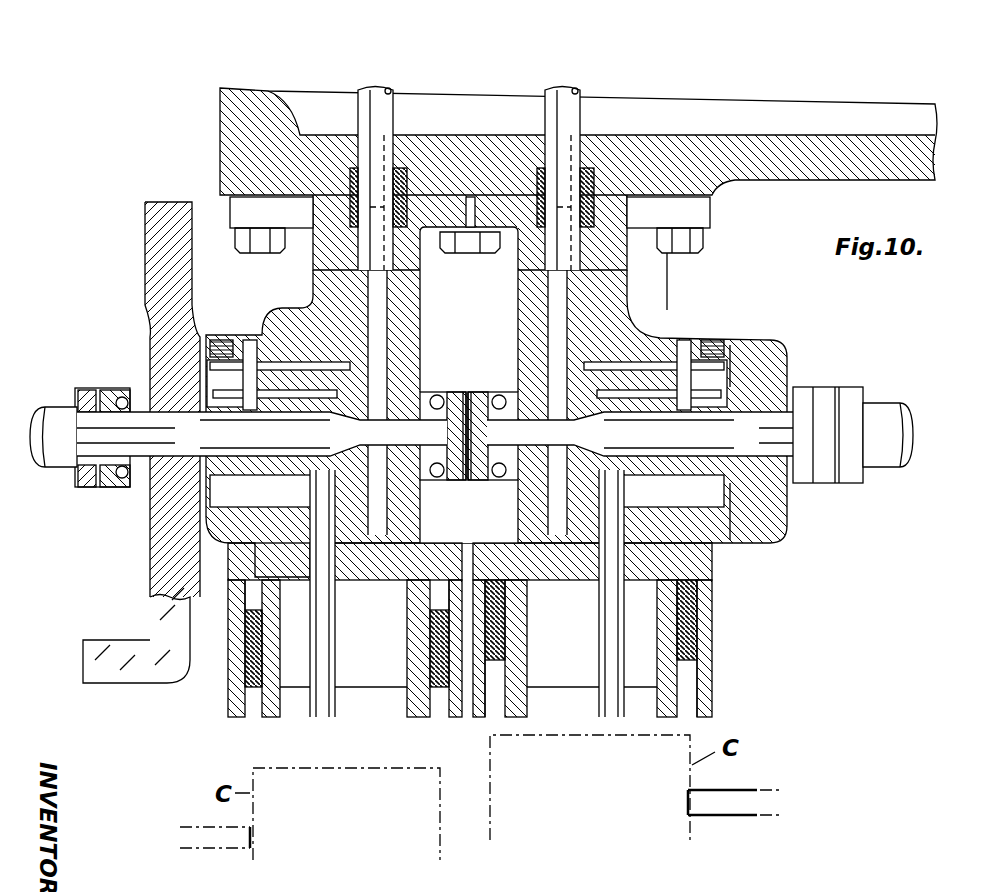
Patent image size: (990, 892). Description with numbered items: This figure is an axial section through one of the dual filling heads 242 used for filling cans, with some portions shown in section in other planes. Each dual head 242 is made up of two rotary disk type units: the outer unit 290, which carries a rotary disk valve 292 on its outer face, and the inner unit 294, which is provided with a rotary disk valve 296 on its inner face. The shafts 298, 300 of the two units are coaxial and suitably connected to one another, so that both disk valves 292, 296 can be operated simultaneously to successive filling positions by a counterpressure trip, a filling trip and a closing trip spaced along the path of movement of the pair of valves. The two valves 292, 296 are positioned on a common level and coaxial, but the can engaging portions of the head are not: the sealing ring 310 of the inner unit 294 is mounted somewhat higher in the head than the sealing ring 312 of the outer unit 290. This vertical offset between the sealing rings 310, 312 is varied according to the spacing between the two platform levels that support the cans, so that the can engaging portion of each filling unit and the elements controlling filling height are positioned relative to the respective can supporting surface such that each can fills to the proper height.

The filling head 242 is at (663, 308).
The outer unit 290 is at (259, 330).
The rotary disk valve 292 is at (167, 498).
The inner unit 294 is at (660, 338).
The rotary disk valve 296 is at (787, 353).
The shaft 298 is at (153, 397).
The shaft 300 is at (768, 437).
The sealing ring 310 is at (678, 627).
The sealing ring 312 is at (240, 673).